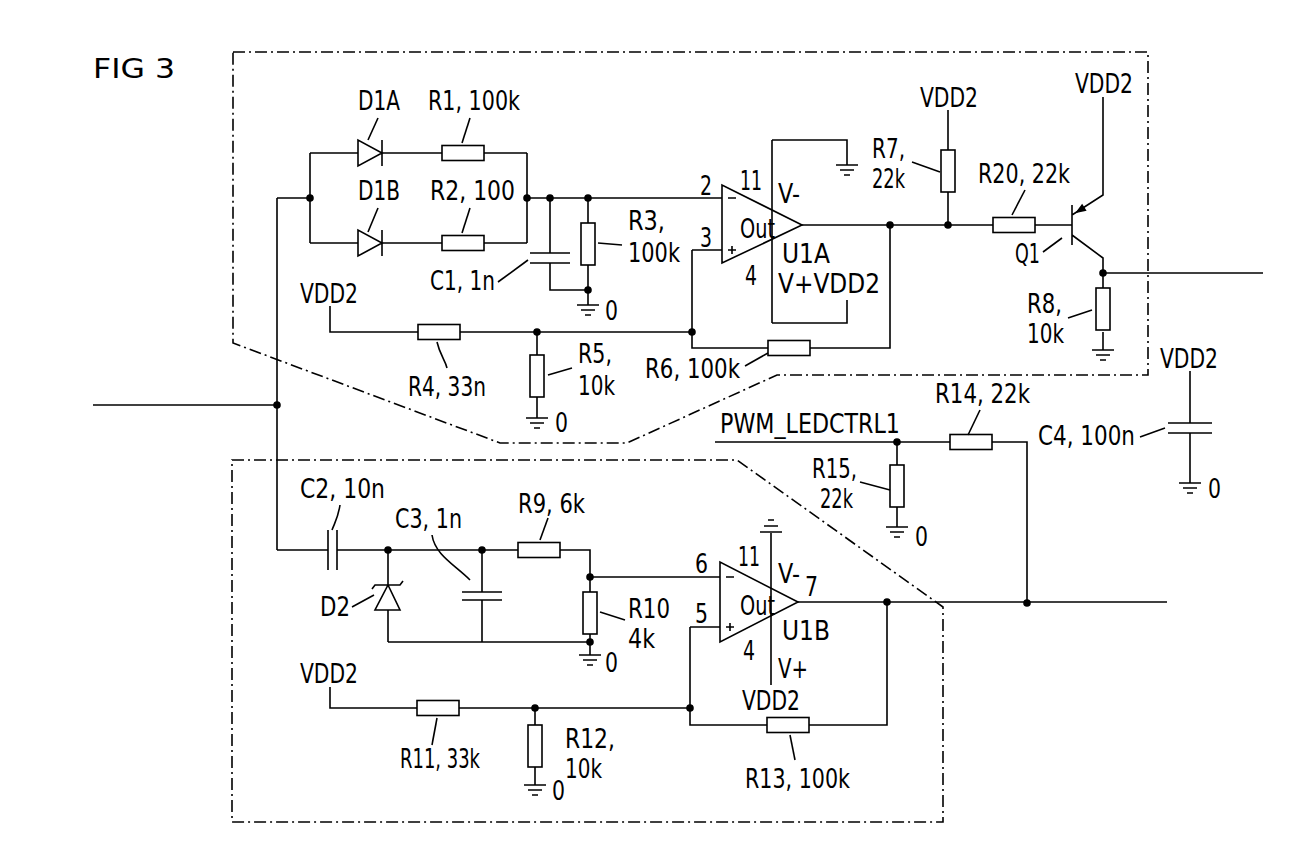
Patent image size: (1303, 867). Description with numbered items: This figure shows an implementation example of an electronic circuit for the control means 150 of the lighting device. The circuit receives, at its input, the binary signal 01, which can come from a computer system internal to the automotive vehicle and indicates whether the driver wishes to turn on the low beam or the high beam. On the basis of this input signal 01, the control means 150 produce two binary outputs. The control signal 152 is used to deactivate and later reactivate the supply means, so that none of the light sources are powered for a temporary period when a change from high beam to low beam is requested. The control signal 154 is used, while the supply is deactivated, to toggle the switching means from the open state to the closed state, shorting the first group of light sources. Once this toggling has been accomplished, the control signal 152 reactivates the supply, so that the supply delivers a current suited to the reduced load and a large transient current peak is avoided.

The control means 150 is at (163, 225).
The control signal 152 is at (1095, 605).
The control signal 154 is at (1200, 280).
The signal 01 is at (108, 400).